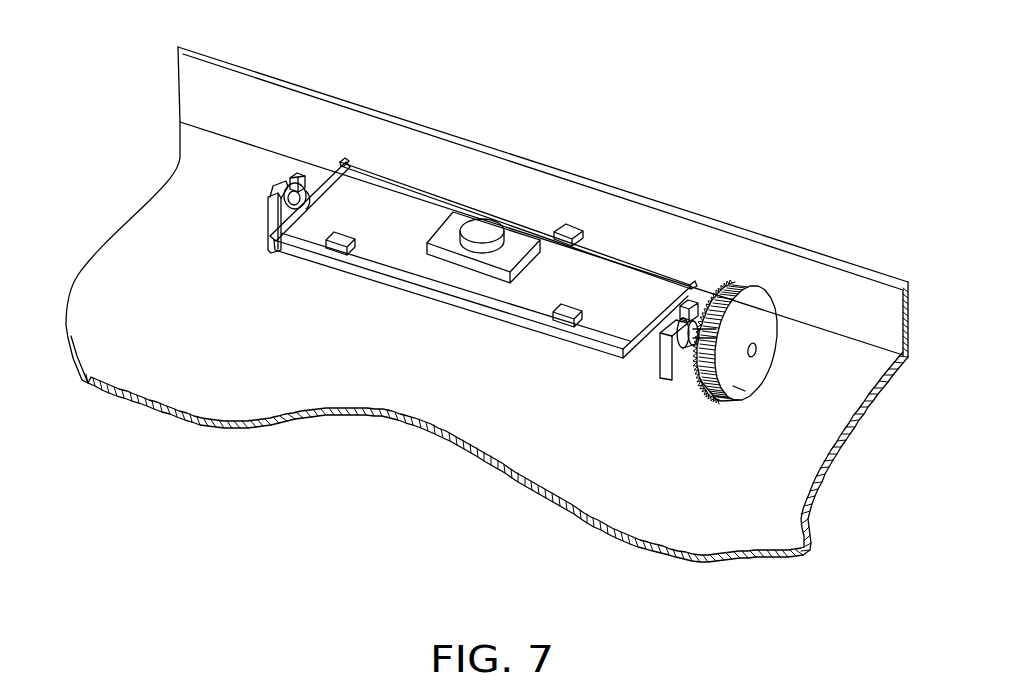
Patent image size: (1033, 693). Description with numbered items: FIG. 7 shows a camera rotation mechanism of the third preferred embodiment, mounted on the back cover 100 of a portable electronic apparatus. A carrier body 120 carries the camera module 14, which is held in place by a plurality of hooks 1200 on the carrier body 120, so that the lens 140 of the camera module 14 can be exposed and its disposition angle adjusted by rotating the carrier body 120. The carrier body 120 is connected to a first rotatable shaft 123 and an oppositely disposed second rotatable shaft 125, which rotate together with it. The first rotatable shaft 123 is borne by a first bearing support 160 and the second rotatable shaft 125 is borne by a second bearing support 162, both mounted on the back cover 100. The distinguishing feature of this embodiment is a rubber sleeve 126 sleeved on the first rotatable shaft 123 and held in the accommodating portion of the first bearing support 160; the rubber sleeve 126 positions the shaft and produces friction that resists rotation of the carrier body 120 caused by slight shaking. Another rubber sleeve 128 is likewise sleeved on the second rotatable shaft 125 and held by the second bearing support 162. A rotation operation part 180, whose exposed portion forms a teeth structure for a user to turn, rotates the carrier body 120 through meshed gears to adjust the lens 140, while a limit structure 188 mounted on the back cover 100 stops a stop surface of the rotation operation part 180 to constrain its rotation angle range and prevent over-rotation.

The back cover 100 is at (102, 272).
The camera module 14 is at (408, 203).
The carrier body 120 is at (410, 284).
The hooks 1200 is at (568, 230).
The lens 140 is at (482, 230).
The rubber sleeve 128 is at (273, 211).
The second rotatable shaft 125 is at (296, 209).
The second bearing support 162 is at (297, 174).
The rubber sleeve 126 is at (660, 350).
The first bearing support 160 is at (694, 300).
The first rotatable shaft 123 is at (700, 343).
The rotation operation part 180 is at (760, 323).
The limit structure 188 is at (733, 386).